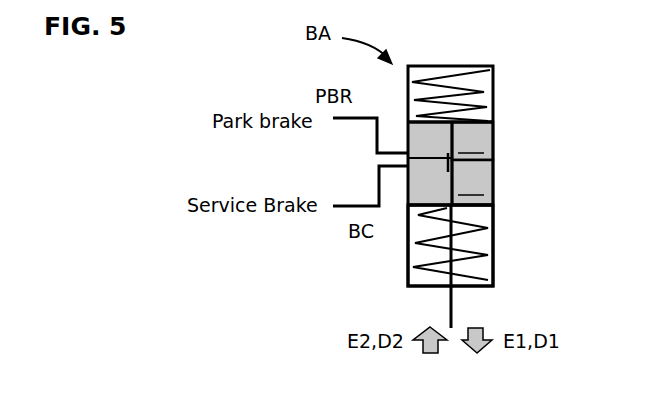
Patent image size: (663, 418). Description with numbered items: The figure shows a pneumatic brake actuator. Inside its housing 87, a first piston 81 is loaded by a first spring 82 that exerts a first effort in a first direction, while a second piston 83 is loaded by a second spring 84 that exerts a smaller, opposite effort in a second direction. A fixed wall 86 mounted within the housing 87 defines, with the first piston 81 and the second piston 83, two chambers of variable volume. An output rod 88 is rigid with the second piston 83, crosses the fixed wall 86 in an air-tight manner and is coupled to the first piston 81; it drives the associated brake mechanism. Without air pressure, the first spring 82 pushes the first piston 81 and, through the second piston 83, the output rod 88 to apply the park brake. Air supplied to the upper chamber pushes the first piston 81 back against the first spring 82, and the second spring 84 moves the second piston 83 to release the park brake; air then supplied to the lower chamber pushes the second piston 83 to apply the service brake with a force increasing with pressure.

The first piston 81 is at (490, 121).
The first spring 82 is at (448, 78).
The second piston 83 is at (485, 205).
The second spring 84 is at (475, 237).
The fixed wall 86 is at (485, 158).
The housing 87 is at (408, 255).
The output rod 88 is at (453, 305).